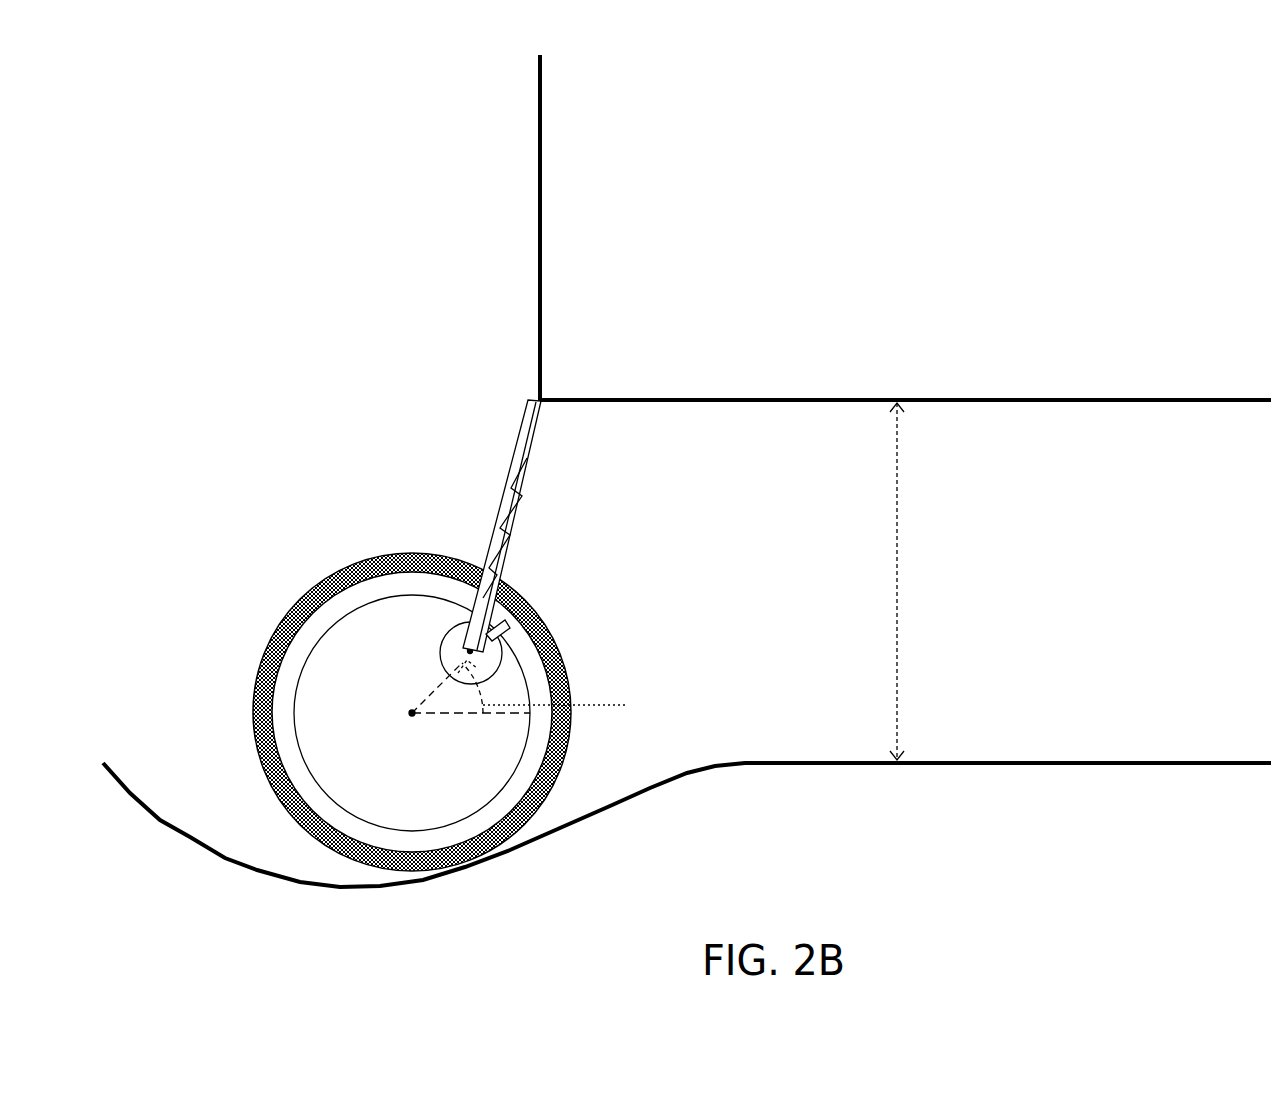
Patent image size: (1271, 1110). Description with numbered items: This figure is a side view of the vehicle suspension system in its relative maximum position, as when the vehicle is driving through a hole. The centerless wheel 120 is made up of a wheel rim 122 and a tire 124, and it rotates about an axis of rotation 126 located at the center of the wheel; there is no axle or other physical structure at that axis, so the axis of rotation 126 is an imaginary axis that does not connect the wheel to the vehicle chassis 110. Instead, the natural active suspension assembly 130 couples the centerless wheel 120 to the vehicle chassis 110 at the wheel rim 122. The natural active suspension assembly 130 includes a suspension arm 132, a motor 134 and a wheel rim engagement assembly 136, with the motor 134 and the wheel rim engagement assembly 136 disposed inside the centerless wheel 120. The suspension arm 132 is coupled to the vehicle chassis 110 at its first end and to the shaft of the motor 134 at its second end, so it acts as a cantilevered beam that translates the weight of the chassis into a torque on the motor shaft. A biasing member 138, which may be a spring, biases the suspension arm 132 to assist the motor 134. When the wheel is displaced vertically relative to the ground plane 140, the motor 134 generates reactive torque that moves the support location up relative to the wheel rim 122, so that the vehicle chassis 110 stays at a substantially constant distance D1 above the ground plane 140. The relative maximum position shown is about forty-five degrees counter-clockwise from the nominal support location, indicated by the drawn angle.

The vehicle chassis 110 is at (575, 272).
The centerless wheel 120 is at (354, 672).
The wheel rim 122 is at (285, 703).
The tire 124 is at (320, 585).
The axis of rotation 126 is at (412, 713).
The natural active suspension assembly 130 is at (518, 640).
The suspension arm 132 is at (543, 430).
The motor 134 is at (452, 637).
The wheel rim engagement assembly 136 is at (507, 632).
The biasing member 138 is at (523, 497).
The ground plane 140 is at (1177, 762).
The distance D1 is at (897, 637).